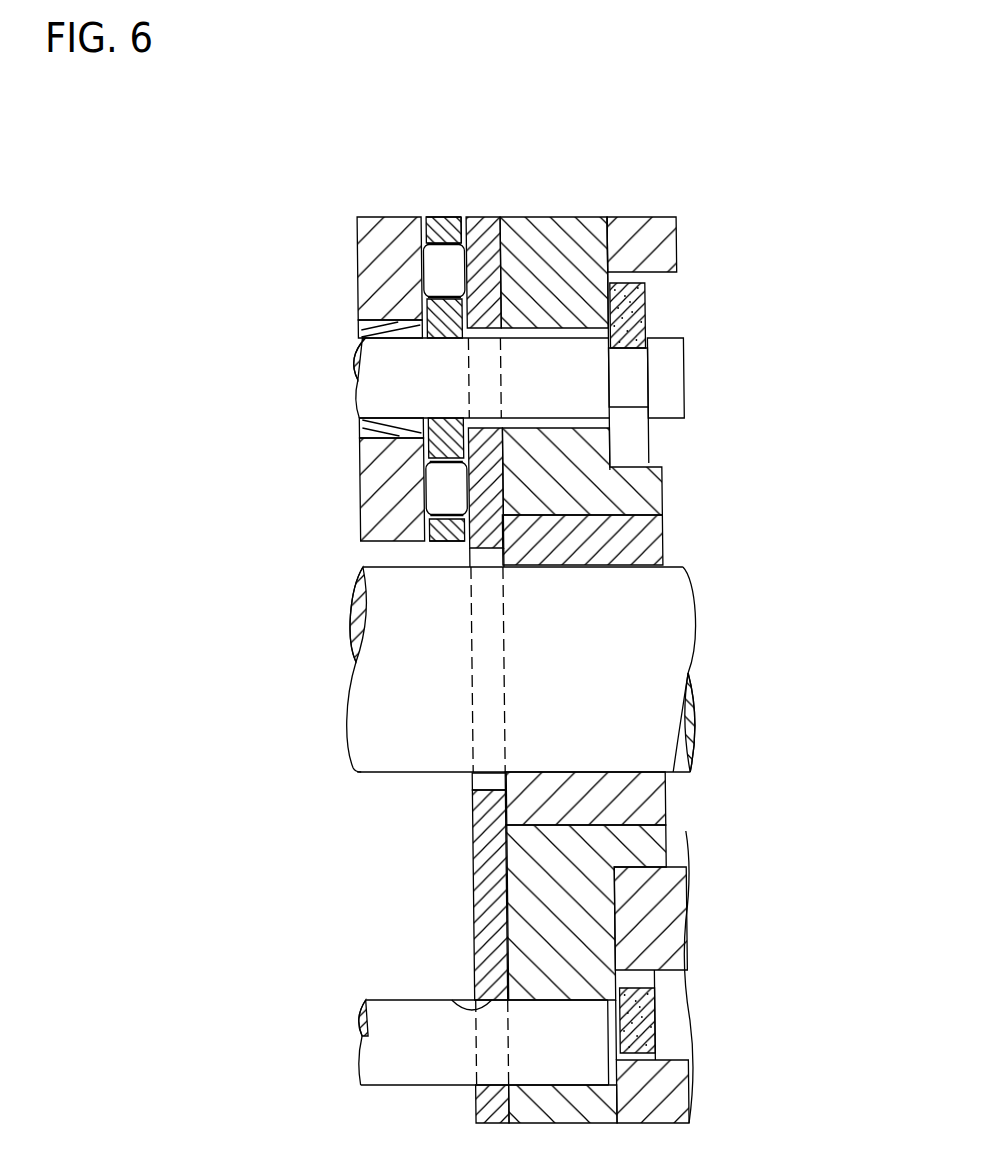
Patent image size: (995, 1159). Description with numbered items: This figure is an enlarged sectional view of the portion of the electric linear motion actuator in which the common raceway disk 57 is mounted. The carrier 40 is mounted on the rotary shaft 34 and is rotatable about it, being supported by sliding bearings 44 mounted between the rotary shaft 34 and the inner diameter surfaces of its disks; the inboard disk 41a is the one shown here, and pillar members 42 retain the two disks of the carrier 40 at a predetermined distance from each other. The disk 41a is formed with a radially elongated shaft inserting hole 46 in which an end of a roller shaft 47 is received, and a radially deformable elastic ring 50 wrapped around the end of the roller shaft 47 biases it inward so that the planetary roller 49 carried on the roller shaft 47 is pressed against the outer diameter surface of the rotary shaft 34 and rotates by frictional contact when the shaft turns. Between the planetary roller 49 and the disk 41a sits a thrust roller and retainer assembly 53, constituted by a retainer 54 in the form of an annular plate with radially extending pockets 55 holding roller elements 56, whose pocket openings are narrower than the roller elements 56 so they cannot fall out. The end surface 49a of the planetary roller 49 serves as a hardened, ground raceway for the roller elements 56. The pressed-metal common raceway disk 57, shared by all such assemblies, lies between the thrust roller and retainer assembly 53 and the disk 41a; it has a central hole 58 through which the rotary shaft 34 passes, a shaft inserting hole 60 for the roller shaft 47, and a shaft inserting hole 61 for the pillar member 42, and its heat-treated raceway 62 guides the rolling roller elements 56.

The rotary shaft 34 is at (374, 650).
The carrier 40 is at (548, 206).
The disk 41a is at (583, 228).
The pillar member 42 is at (393, 1017).
The sliding bearing 44 is at (650, 540).
The shaft inserting hole 46 is at (613, 363).
The roller shaft 47 is at (590, 390).
The planetary roller 49 is at (372, 236).
The end surface (raceway) 49a is at (432, 305).
The elastic ring 50 is at (648, 312).
The thrust roller and retainer assembly 53 is at (427, 210).
The retainer 54 is at (450, 217).
The pocket 55 is at (430, 253).
The roller element 56 is at (435, 273).
The common raceway disk 57 is at (480, 222).
The central hole 58 is at (489, 790).
The shaft inserting hole 60 is at (488, 427).
The shaft inserting hole 61 is at (448, 1000).
The raceway 62 is at (428, 529).